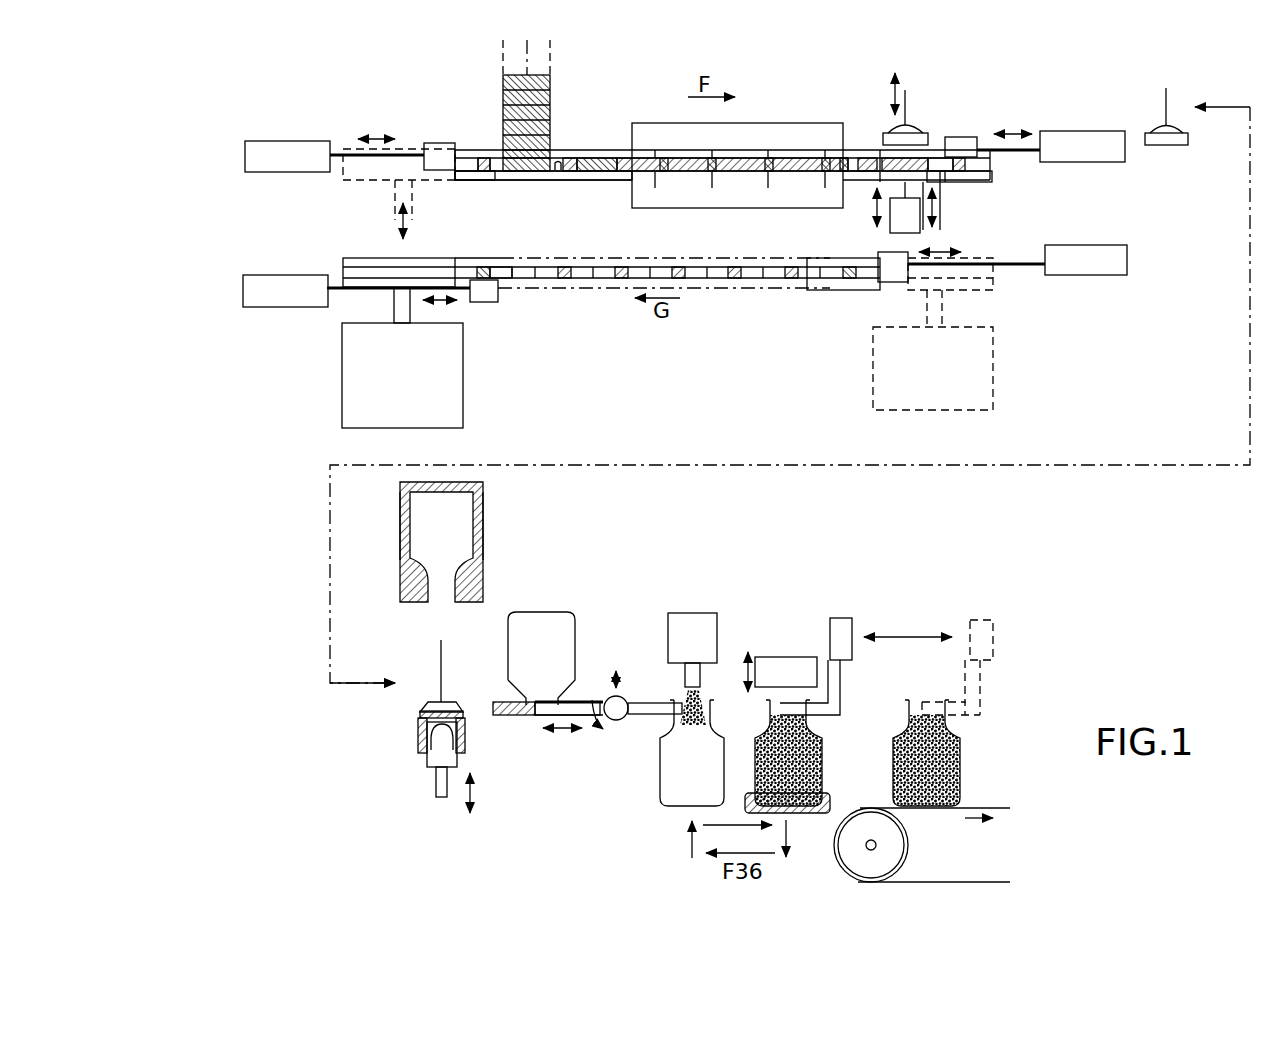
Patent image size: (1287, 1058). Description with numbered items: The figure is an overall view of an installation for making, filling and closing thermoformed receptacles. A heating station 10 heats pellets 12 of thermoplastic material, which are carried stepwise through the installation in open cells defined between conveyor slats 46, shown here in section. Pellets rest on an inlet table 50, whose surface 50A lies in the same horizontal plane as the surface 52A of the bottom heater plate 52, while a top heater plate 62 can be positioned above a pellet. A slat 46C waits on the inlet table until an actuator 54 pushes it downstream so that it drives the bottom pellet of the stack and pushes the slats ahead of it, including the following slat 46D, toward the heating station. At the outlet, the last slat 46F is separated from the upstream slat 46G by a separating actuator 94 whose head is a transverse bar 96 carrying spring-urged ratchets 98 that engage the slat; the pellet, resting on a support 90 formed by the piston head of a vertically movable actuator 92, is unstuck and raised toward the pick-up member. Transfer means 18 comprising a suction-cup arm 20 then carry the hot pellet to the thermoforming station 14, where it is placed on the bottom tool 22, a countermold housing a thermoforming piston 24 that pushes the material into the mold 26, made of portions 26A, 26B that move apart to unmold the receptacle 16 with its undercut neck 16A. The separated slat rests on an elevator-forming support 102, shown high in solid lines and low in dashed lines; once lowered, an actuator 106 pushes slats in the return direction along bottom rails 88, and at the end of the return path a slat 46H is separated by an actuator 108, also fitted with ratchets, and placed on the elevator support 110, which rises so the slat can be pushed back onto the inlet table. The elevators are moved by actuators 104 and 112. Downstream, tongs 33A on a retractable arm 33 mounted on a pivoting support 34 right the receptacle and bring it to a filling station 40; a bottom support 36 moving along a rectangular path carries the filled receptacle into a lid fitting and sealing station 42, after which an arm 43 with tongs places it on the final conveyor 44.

The heating station 10 is at (672, 108).
The pellet 12 is at (503, 96).
The thermoforming station 14 is at (346, 480).
The receptacle 16 is at (549, 611).
The neck 16A is at (524, 703).
The transfer means 18 is at (950, 97).
The suction-cup arm 20 is at (894, 127).
The bottom tool 22 is at (466, 732).
The thermoforming piston 24 is at (437, 758).
The thermoforming mold 26 is at (405, 588).
The mold portion 26A is at (483, 528).
The mold portion 26B is at (401, 531).
The retractable arm 33 is at (577, 701).
The tongs 33A is at (544, 715).
The pivotally mounted support 34 is at (620, 714).
The bottom support 36 is at (832, 805).
The filling station 40 is at (697, 628).
The lid fitting and sealing station 42 is at (784, 665).
The arm with tongs 43 is at (978, 690).
The final conveyor 44 is at (840, 862).
The conveyor slat 46 is at (772, 280).
The conveyor slat in waiting position 46C is at (482, 158).
The belt segment 46D is at (566, 157).
The downstream conveyor slat 46F is at (975, 164).
The upstream conveyor slat 46G is at (862, 157).
The conveyor slat at end of return path 46H is at (503, 270).
The inlet table 50 is at (586, 182).
The inlet table surface 50A is at (558, 173).
The bottom heater plate 52 is at (741, 190).
The bottom heater plate surface 52A is at (676, 172).
The actuator 54 is at (312, 120).
The top heater plate 62 is at (771, 133).
The longitudinal rail 88 is at (467, 176).
The support 90 is at (873, 177).
The actuator 92 is at (900, 226).
The separating actuator 94 is at (1086, 128).
The transverse bar 96 is at (962, 137).
The ratchets 98 is at (476, 270).
The elevator support 102 is at (951, 182).
The actuator 104 is at (883, 362).
The actuator 106 is at (1127, 262).
The actuator 108 is at (243, 293).
The elevator support 110 is at (367, 183).
The actuator 112 is at (461, 383).